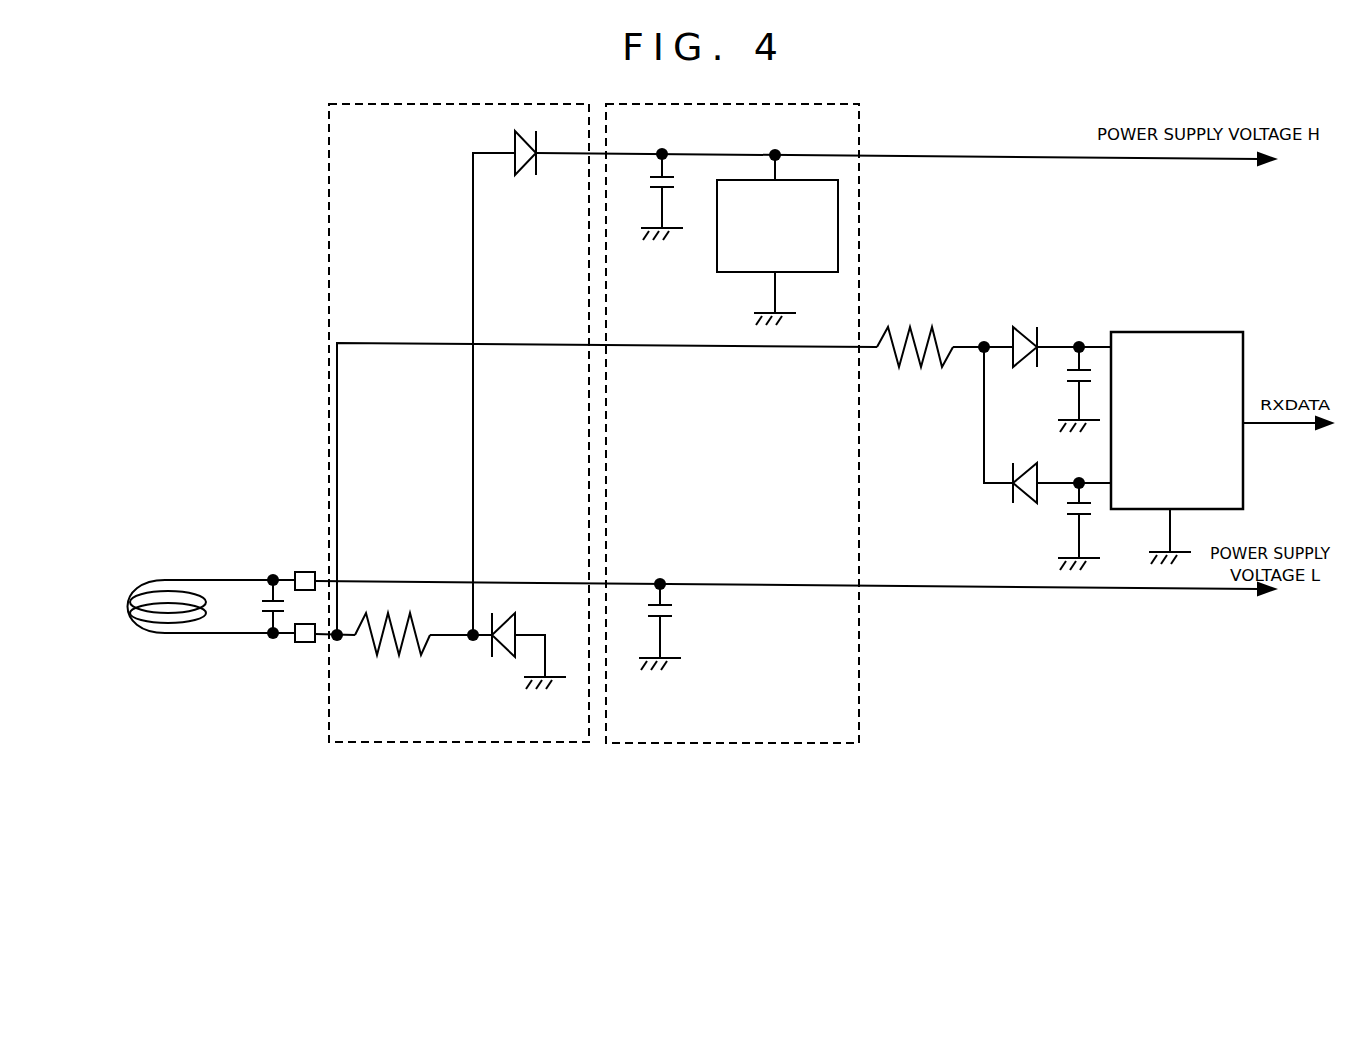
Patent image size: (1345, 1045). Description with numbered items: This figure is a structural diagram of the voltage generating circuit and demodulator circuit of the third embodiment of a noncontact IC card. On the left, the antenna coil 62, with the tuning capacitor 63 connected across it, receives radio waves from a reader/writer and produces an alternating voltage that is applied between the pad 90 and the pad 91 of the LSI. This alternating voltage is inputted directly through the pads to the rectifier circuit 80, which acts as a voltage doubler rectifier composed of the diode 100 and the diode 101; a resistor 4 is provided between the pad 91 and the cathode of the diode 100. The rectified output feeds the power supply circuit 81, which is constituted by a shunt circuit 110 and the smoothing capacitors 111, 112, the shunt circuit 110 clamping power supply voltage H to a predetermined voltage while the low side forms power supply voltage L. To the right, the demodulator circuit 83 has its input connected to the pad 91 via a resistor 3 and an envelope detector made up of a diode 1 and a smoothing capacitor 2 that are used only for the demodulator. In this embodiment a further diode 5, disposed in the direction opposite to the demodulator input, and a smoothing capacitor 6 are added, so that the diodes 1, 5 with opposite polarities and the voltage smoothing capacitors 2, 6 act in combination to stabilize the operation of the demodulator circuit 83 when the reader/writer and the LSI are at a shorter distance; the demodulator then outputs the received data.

The diode 1 is at (1027, 325).
The smoothing capacitor 2 is at (1066, 375).
The resistor 3 is at (902, 368).
The resistor 4 is at (380, 656).
The diode 5 is at (1022, 494).
The smoothing capacitor 6 is at (1093, 518).
The antenna coil 62 is at (173, 580).
The tuning capacitor 63 is at (262, 609).
The rectifier circuit 80 is at (520, 742).
The power supply circuit 81 is at (748, 743).
The demodulator circuit 83 is at (1160, 332).
The pad 90 is at (302, 572).
The pad 91 is at (297, 642).
The diode 100 is at (488, 657).
The diode 101 is at (522, 177).
The shunt circuit 110 is at (743, 272).
The smoothing capacitor 111 is at (680, 605).
The smoothing capacitor 112 is at (678, 188).